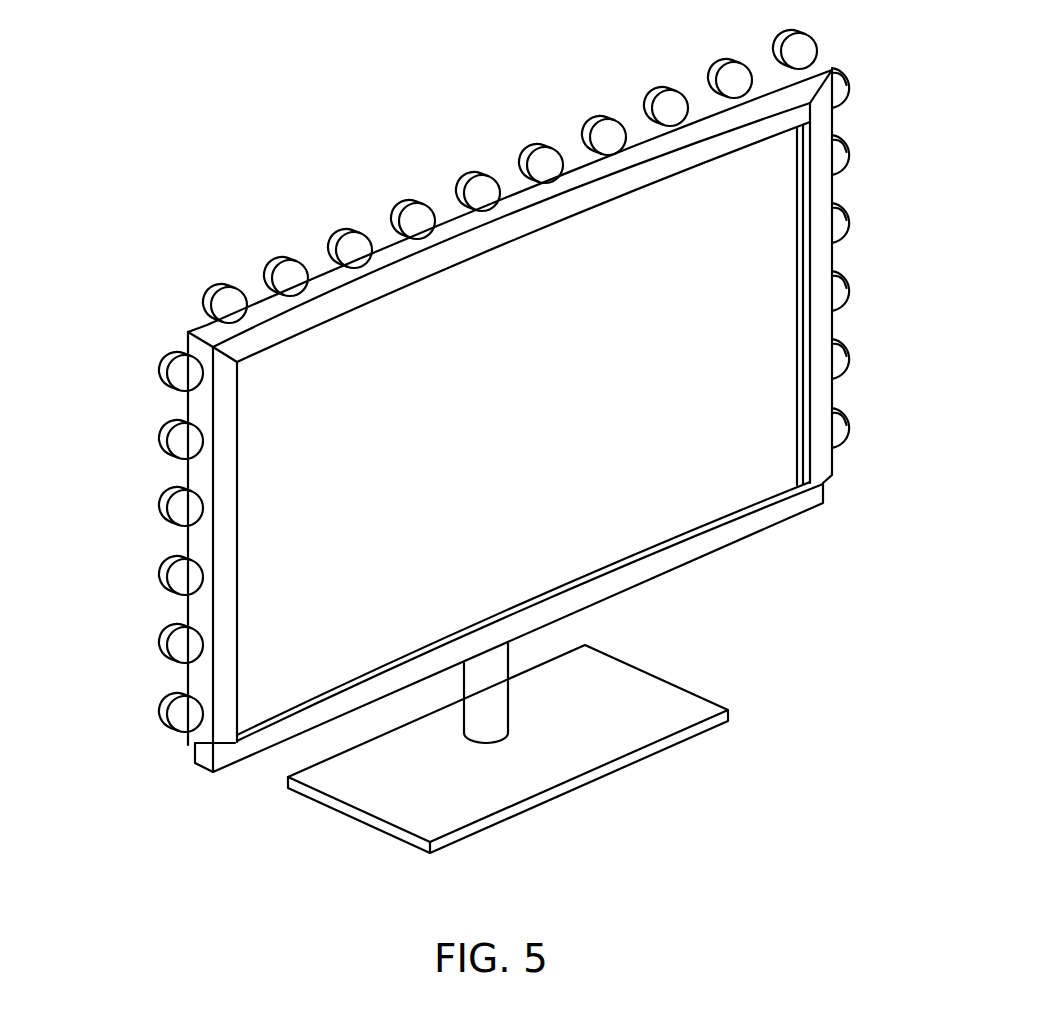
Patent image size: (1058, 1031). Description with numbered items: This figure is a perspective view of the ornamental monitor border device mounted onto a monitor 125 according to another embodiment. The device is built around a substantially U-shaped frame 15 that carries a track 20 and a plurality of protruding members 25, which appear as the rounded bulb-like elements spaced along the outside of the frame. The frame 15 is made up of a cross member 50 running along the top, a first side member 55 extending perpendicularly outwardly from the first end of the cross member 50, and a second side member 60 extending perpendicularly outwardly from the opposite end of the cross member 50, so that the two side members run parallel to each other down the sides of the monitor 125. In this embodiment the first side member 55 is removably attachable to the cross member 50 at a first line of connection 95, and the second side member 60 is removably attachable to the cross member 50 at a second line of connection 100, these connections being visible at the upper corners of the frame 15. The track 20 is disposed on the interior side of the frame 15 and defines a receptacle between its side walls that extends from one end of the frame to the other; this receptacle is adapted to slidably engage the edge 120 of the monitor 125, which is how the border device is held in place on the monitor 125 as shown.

The substantially U-shaped frame 15 is at (475, 434).
The track 20 is at (804, 376).
The protruding members 25 is at (600, 120).
The cross member 50 is at (513, 228).
The first side member 55 is at (200, 473).
The second side member 60 is at (822, 258).
The first line of connection 95 is at (220, 350).
The second line of connection 100 is at (818, 92).
The edge of monitor 120 is at (818, 492).
The monitor 125 is at (716, 570).